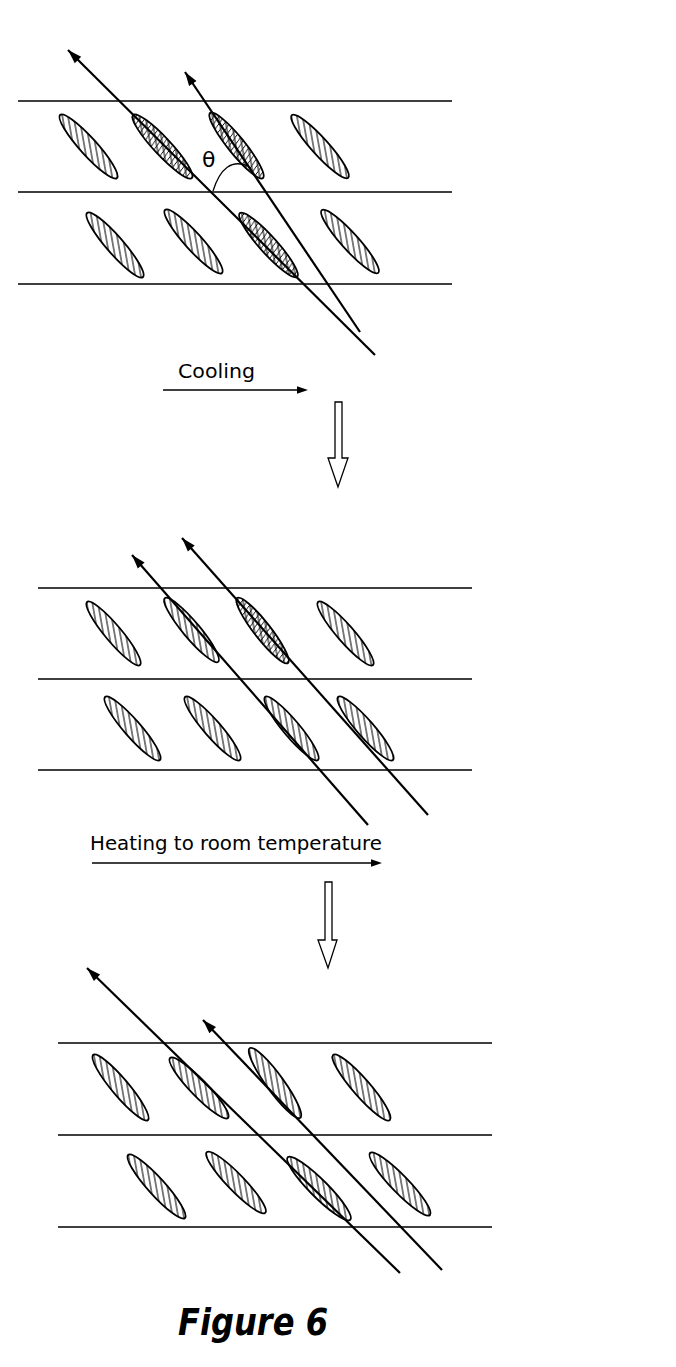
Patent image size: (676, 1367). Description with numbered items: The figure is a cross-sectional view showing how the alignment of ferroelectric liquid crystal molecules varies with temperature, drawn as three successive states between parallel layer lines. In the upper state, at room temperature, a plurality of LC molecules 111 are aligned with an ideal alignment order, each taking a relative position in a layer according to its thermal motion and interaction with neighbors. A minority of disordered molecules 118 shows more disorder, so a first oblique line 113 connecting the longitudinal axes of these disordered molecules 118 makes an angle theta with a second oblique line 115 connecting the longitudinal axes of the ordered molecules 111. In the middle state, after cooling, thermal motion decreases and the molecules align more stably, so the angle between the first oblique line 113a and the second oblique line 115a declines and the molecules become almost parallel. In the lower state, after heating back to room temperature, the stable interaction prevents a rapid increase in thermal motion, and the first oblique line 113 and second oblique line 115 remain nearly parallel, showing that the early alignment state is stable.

The LC molecules 111 is at (320, 135).
The first oblique line 113 is at (105, 80).
The first oblique line after cooling 113a is at (155, 577).
The second oblique line 115 is at (202, 91).
The second oblique line after cooling 115a is at (213, 570).
The disordered LC molecules 118 is at (153, 118).